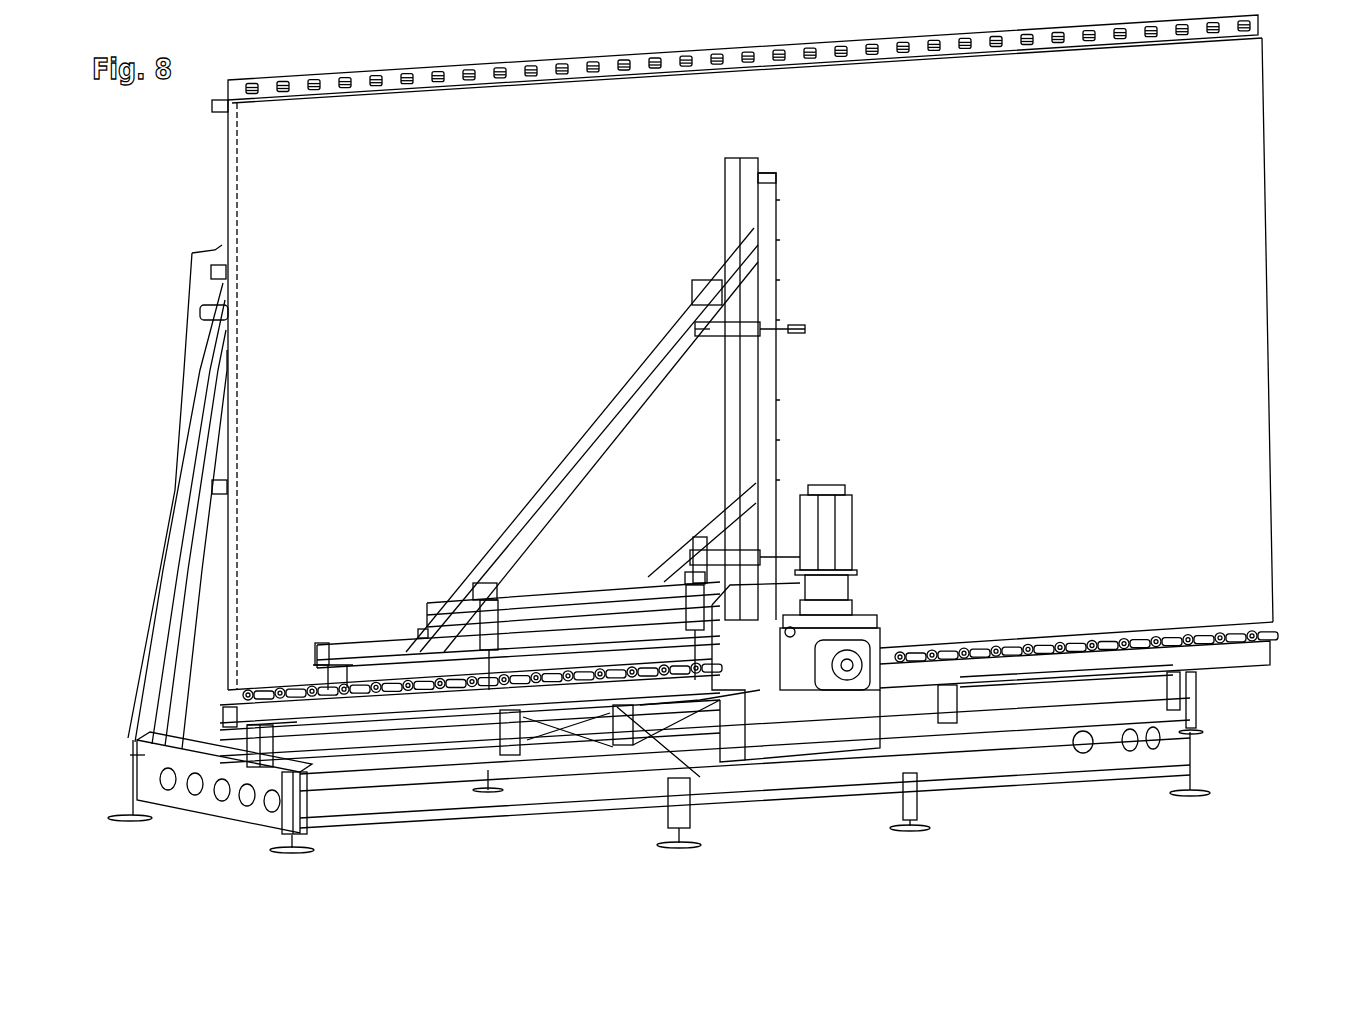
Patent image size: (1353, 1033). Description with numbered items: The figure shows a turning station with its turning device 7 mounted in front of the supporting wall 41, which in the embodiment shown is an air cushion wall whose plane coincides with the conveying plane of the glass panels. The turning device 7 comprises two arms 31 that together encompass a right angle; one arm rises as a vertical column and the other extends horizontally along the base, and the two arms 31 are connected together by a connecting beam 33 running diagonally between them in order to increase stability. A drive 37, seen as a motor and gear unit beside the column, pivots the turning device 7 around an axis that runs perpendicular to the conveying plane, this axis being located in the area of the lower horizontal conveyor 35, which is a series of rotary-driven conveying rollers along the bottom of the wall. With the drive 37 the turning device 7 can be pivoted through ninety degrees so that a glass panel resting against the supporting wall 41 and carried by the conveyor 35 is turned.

The supporting wall 41 is at (1208, 228).
The arms 31 is at (765, 370).
The connecting beam 33 is at (585, 465).
The turning device 7 is at (797, 451).
The drive 37 is at (877, 600).
The lower horizontal conveyor 35 is at (1205, 632).